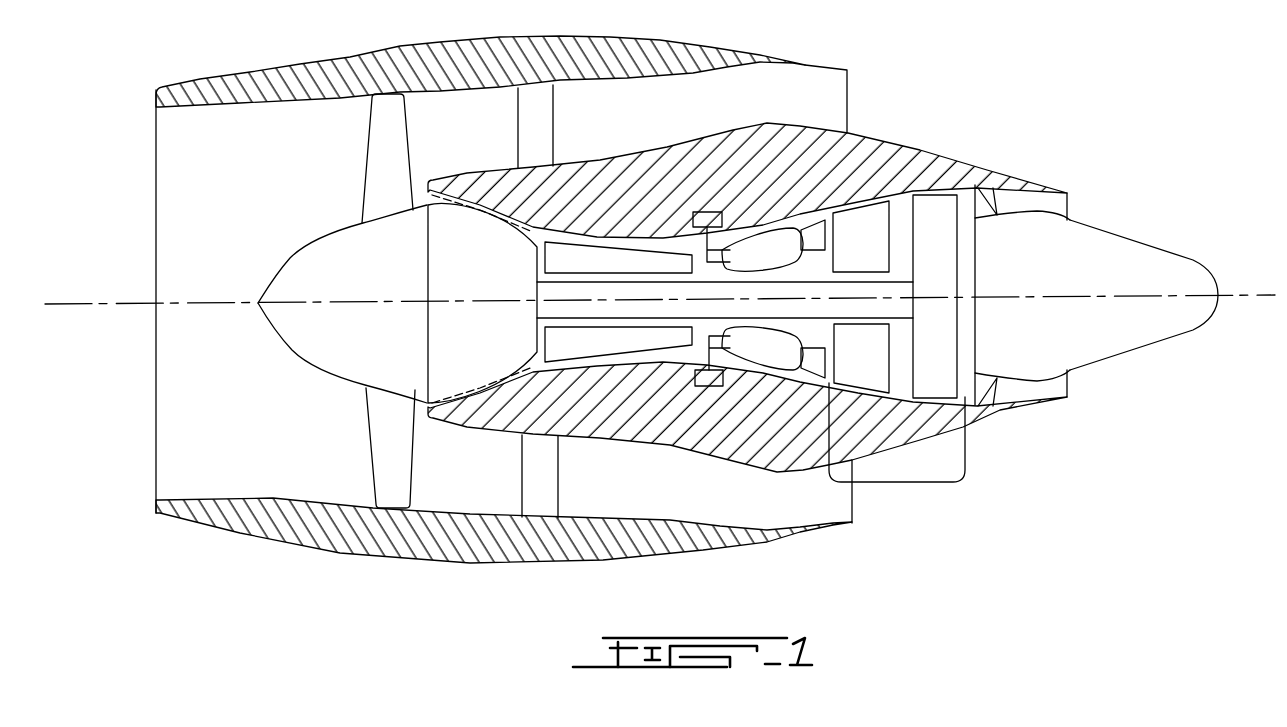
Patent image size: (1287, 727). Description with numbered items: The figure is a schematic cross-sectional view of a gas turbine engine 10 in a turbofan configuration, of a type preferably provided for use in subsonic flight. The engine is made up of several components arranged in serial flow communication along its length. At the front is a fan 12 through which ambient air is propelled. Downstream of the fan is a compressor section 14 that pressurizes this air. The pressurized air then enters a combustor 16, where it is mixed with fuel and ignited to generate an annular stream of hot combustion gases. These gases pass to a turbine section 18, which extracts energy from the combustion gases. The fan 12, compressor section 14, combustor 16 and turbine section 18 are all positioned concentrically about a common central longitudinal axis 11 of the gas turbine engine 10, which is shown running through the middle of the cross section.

The gas turbine engine 10 is at (995, 93).
The common central longitudinal axis 11 is at (1147, 295).
The fan 12 is at (388, 433).
The compressor section 14 is at (599, 257).
The combustor 16 is at (749, 258).
The turbine section 18 is at (897, 483).